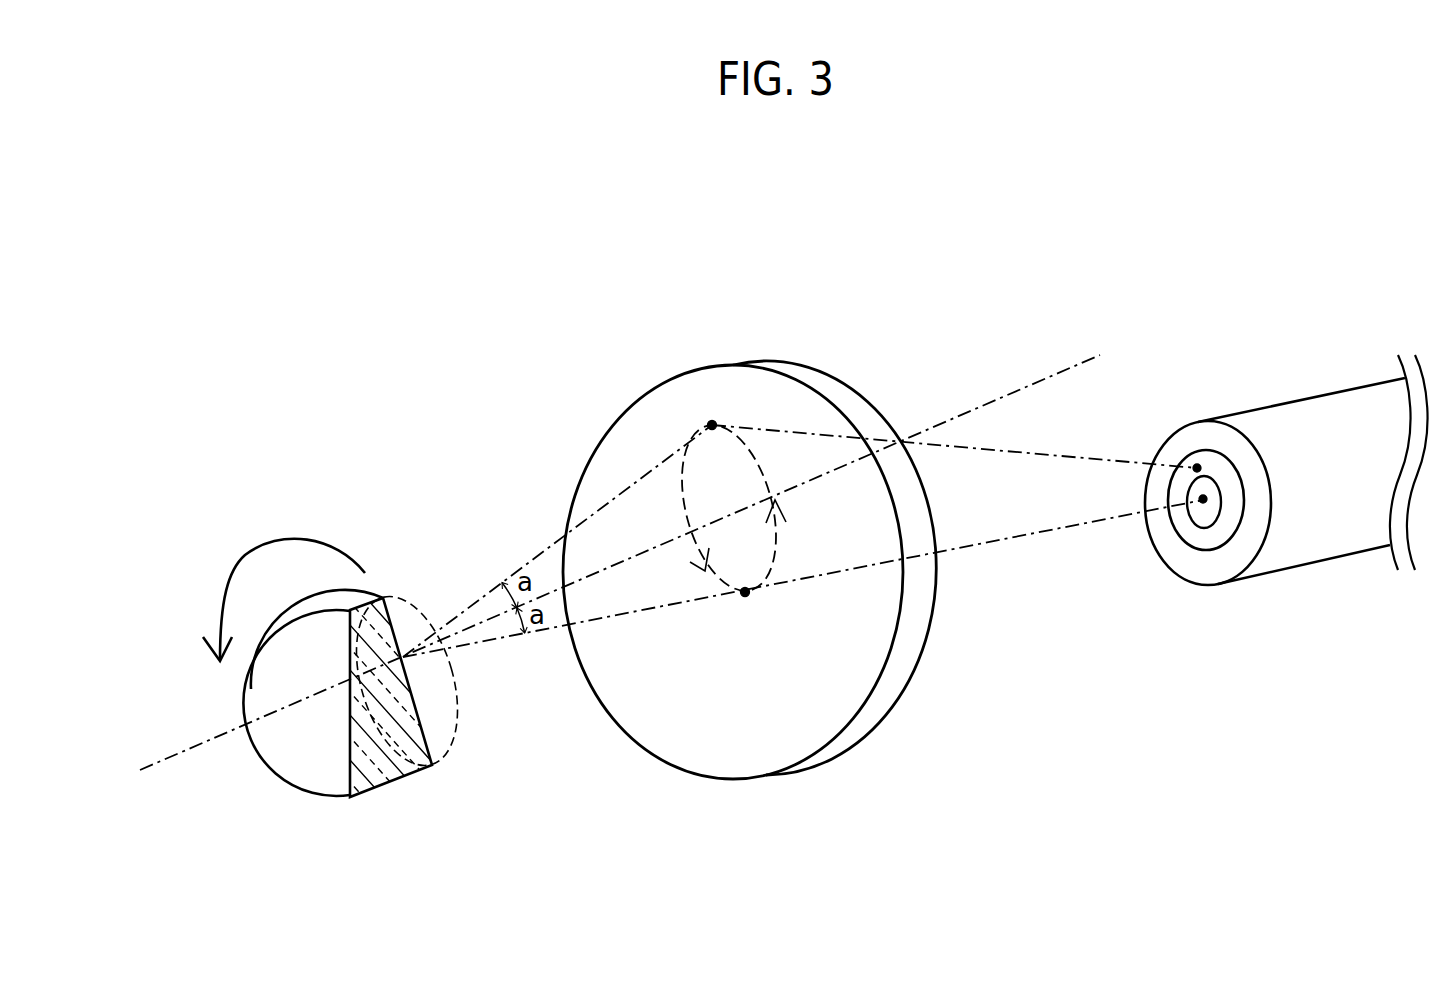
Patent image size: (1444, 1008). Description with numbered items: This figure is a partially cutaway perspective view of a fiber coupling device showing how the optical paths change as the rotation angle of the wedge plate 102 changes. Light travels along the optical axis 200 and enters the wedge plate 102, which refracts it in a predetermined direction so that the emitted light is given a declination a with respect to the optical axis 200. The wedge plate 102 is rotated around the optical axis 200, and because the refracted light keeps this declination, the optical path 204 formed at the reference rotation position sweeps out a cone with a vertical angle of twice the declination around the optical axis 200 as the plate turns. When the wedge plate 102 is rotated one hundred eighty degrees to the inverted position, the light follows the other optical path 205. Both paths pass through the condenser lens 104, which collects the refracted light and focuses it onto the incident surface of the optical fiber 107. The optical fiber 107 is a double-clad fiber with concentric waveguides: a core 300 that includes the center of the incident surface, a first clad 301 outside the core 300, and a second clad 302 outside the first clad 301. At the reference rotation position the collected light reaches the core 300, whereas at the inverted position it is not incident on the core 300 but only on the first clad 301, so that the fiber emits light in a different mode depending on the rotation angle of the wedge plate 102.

The wedge plate 102 is at (387, 773).
The condenser lens 104 is at (600, 475).
The optical fiber 107 is at (1332, 547).
The optical axis 200 is at (162, 763).
The optical path 204 is at (1047, 533).
The optical path 205 is at (1113, 457).
The core 300 is at (1207, 487).
The first clad 301 is at (1208, 540).
The second clad 302 is at (1170, 553).